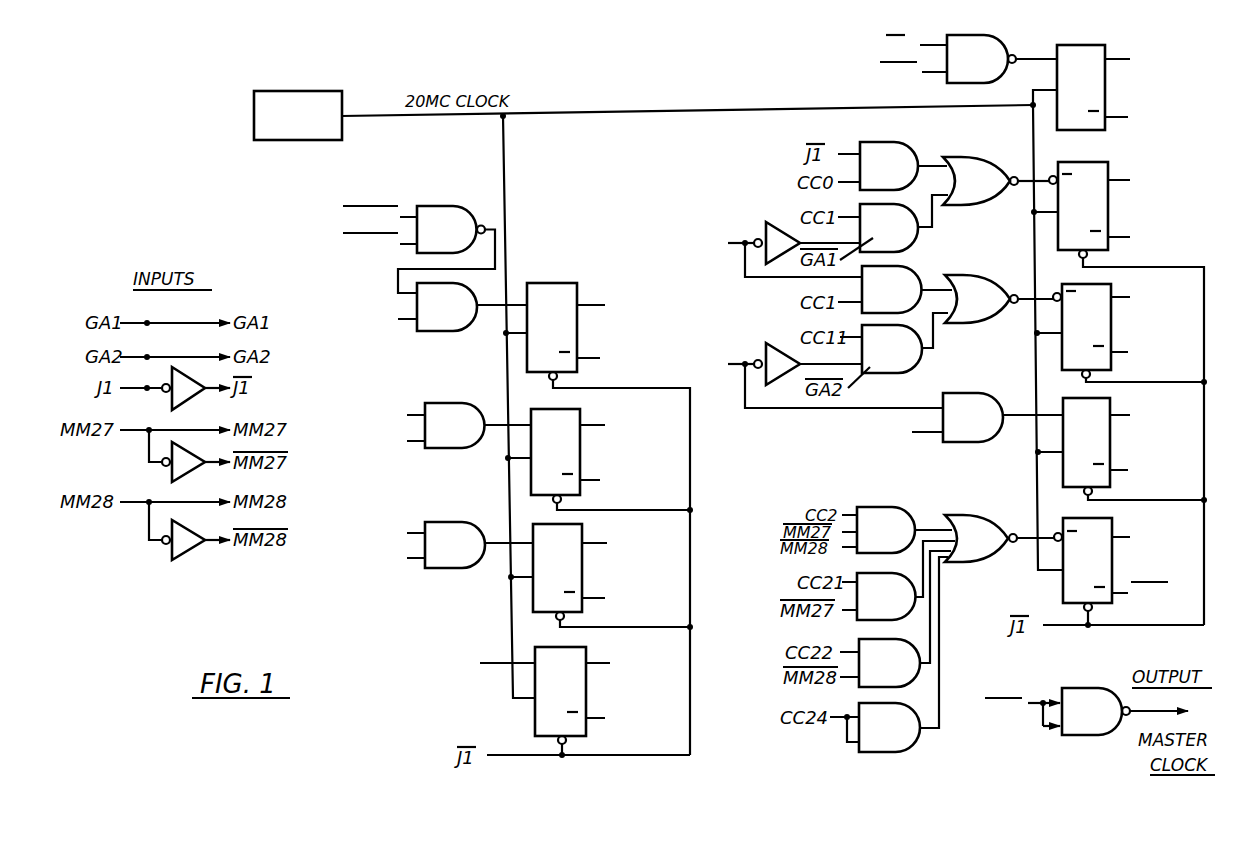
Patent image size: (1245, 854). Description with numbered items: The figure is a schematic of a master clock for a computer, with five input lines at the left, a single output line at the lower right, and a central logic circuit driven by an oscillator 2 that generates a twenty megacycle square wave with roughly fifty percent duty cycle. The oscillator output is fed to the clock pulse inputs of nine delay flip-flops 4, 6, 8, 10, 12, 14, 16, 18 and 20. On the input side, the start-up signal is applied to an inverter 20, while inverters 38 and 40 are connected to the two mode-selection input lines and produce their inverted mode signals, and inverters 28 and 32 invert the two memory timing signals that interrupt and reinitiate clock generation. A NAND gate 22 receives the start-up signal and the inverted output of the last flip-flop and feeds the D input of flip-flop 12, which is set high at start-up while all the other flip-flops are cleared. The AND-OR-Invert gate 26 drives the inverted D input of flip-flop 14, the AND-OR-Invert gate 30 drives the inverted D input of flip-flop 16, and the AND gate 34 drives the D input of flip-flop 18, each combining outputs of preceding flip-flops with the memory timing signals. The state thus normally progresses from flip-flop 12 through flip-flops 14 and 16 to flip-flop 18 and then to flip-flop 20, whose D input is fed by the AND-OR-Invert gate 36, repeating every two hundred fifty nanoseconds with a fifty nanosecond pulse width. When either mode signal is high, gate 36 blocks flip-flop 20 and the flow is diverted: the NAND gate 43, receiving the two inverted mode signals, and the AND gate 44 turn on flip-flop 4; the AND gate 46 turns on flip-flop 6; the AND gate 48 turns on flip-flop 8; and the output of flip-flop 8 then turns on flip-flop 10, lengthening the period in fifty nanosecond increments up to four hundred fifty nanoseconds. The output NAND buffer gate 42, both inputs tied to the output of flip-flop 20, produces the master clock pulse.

The oscillator 2 is at (310, 91).
The delay flip-flop 4 is at (577, 333).
The delay flip-flop 6 is at (580, 458).
The delay flip-flop 8 is at (582, 577).
The delay flip-flop 10 is at (586, 698).
The delay flip-flop 12 is at (1105, 92).
The delay flip-flop 14 is at (1108, 212).
The delay flip-flop 16 is at (1111, 333).
The delay flip-flop 18 is at (1110, 452).
The delay flip-flop 20 is at (1112, 567).
The NAND gate 22 is at (993, 42).
The Dual AND-OR Invert gate 26 is at (968, 160).
The inverter 28 is at (763, 225).
The AND-OR Invert gate 30 is at (968, 288).
The inverter 32 is at (765, 350).
The AND gate 34 is at (965, 400).
The AND-OR Invert gate 36 is at (968, 515).
The inverter 38 is at (173, 470).
The inverter 40 is at (173, 548).
The NAND buffer gate 42 is at (1082, 735).
The NAND gate 43 is at (448, 207).
The AND gate 44 is at (452, 333).
The AND gate 46 is at (457, 449).
The AND gate 48 is at (468, 569).